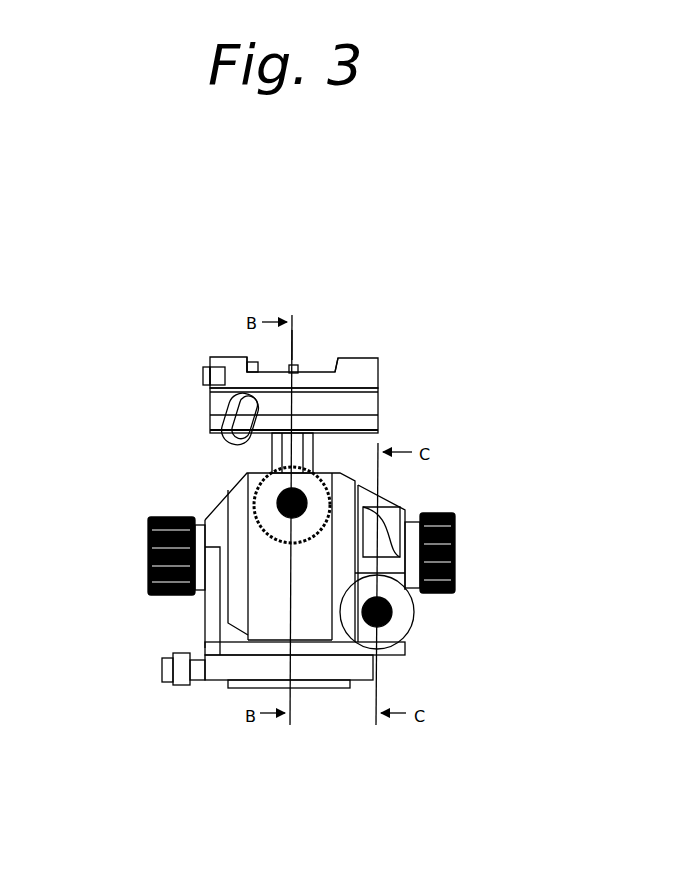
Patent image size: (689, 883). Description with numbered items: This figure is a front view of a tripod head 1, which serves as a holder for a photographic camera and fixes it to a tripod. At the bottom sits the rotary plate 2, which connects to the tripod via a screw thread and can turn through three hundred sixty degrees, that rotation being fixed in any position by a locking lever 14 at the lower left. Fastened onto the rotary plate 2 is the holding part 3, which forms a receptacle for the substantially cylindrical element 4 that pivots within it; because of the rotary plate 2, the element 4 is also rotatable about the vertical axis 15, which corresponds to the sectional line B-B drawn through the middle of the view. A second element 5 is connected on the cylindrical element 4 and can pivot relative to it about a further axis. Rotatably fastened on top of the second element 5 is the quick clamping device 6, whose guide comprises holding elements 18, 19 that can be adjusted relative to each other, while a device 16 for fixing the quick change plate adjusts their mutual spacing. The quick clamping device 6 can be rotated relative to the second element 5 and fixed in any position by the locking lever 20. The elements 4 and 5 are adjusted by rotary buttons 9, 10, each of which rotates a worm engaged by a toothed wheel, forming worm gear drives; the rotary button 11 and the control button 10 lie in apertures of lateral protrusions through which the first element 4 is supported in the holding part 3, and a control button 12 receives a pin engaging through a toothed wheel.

The tripod head 1 is at (514, 215).
The rotary plate 2 is at (211, 688).
The holding part 3 is at (202, 620).
The substantially cylindrical element 4 is at (358, 463).
The second element 5 is at (391, 417).
The quick clamping device 6 is at (394, 357).
The rotary button 9 is at (393, 612).
The rotary button 10 is at (460, 541).
The rotary button 11 is at (146, 558).
The control button 12 is at (268, 497).
The locking lever 14 is at (165, 688).
The vertical axis 15 is at (301, 327).
The device for fixing the quick change plate 16 is at (202, 353).
The holding element 18 is at (261, 354).
The holding element 19 is at (325, 354).
The locking lever 20 is at (212, 410).